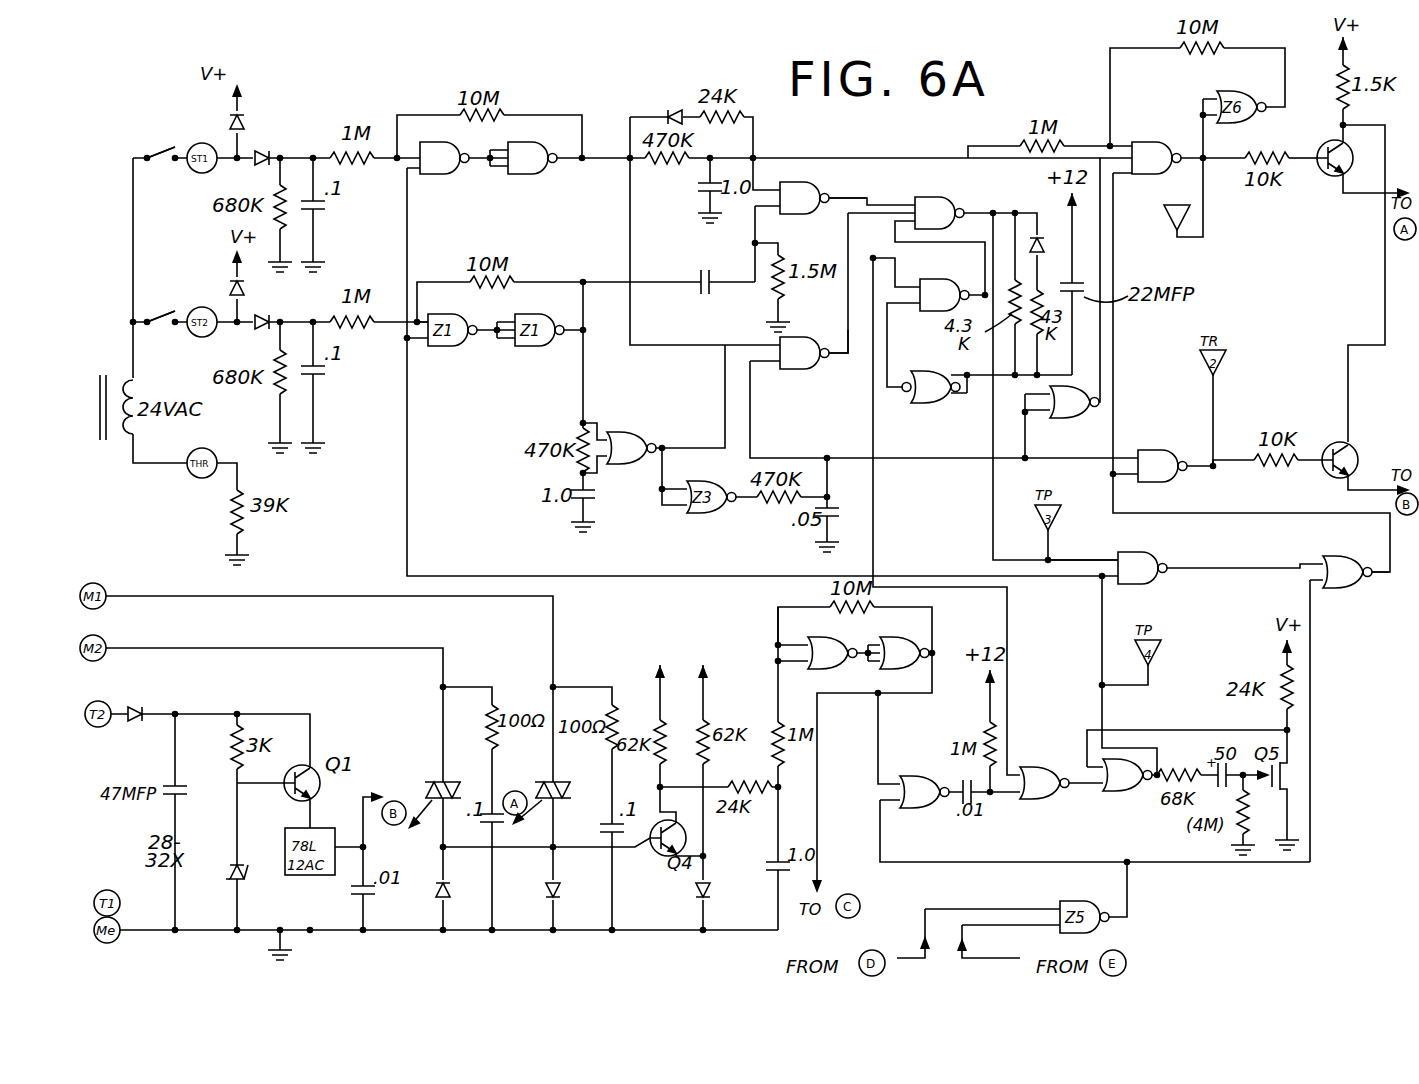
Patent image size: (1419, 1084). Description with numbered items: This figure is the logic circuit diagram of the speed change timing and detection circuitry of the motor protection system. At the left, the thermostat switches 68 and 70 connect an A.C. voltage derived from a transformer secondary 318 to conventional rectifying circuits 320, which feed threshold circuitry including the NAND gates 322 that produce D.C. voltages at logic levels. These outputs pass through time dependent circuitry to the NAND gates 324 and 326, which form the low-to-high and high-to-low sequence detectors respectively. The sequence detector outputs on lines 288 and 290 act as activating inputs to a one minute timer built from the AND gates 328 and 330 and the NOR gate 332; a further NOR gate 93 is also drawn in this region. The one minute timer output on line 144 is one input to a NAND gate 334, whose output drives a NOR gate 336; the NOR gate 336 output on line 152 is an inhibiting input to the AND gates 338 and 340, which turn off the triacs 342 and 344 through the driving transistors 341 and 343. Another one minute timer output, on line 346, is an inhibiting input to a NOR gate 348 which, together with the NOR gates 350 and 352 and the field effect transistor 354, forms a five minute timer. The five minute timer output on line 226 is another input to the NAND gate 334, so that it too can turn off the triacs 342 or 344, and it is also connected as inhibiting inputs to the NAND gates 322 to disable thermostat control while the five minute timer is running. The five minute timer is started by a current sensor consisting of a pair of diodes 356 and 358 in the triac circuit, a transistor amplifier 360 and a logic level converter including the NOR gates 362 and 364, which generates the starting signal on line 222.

The thermostat switch 70 is at (162, 150).
The thermostat switch 68 is at (175, 314).
The rectifying circuits 320 is at (252, 168).
The NAND gates 322 is at (525, 183).
The NAND gate 324 is at (803, 215).
The NAND gate 326 is at (803, 374).
The AND gate 328 is at (948, 189).
The AND gate 330 is at (929, 312).
The NOR gate 332 is at (932, 404).
The NOR gate Z3 93 is at (1060, 417).
The line 290 is at (862, 186).
The line 288 is at (844, 336).
The line 226 is at (408, 440).
The transformer secondary 318 is at (116, 452).
The AND gate 340 is at (1152, 186).
The driving transistor 343 is at (1322, 176).
The driving transistor 341 is at (1328, 446).
The AND gate 338 is at (1170, 441).
The NAND gate 334 is at (1150, 562).
The NOR gate 336 is at (1345, 586).
The line 152 is at (1115, 380).
The line 144 is at (992, 481).
The line 346 is at (874, 538).
The triac 342 is at (436, 788).
The triac 344 is at (545, 790).
The diode 356 is at (438, 893).
The diode 358 is at (546, 893).
The transistor amplifier 360 is at (661, 864).
The NOR gate 362 is at (818, 633).
The NOR gate 364 is at (900, 633).
The NOR gate 348 is at (1038, 794).
The NOR gate 350 is at (920, 808).
The NOR gate 352 is at (1120, 796).
The field effect transistor 354 is at (1278, 808).
The line 222 is at (866, 746).